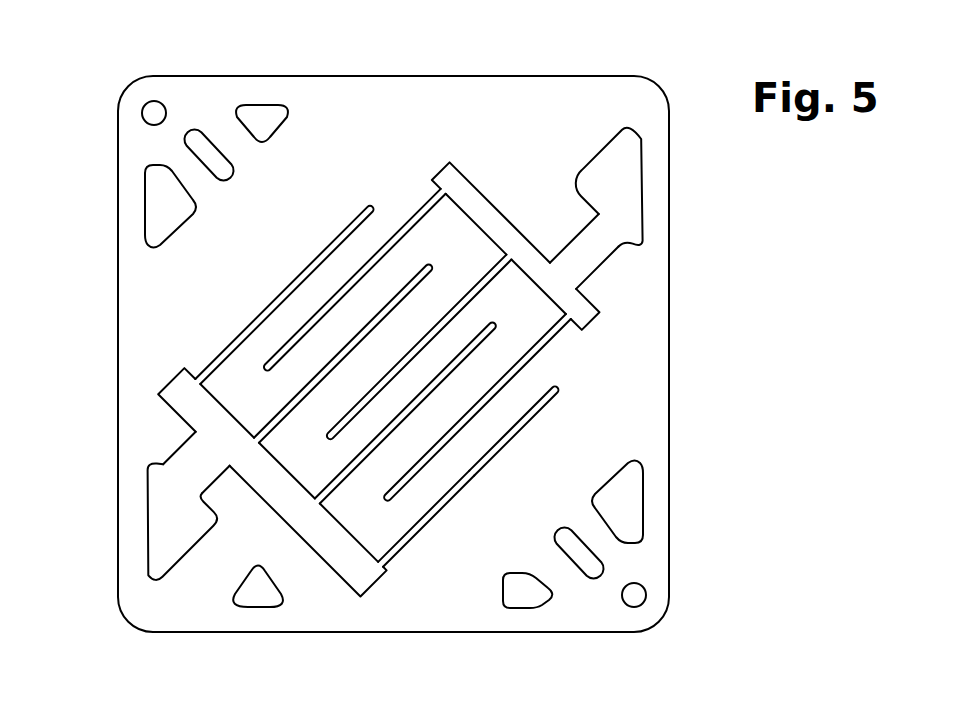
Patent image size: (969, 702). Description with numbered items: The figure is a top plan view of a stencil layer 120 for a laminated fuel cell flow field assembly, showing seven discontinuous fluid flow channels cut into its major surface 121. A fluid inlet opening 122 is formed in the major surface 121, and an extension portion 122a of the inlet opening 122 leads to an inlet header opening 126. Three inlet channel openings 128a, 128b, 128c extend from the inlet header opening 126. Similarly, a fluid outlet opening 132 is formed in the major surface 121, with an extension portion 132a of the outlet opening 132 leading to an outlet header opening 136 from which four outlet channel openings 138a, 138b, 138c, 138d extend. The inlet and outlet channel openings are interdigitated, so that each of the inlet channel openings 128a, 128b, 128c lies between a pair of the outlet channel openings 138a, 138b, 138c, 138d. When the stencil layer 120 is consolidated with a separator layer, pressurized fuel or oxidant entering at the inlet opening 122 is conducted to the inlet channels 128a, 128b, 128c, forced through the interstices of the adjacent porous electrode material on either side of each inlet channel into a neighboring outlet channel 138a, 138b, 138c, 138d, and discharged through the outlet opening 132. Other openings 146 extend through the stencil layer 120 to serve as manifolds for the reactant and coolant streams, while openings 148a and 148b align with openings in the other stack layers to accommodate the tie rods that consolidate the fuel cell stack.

The stencil layer 120 is at (674, 79).
The major surface 121 is at (652, 373).
The fluid inlet opening 122 is at (628, 178).
The extension portion of inlet opening 122a is at (598, 305).
The inlet header opening 126 is at (473, 188).
The inlet channel opening 128a is at (443, 190).
The inlet channel opening 128b is at (550, 338).
The inlet channel opening 128c is at (535, 358).
The fluid outlet opening 132 is at (170, 533).
The extension portion of outlet opening 132a is at (188, 452).
The outlet header opening 136 is at (340, 568).
The outlet channel opening 138a is at (262, 366).
The outlet channel opening 138b is at (225, 345).
The outlet channel opening 138c is at (342, 487).
The outlet channel opening 138d is at (427, 527).
The openings 146 is at (162, 180).
The opening 148a is at (155, 108).
The opening 148b is at (637, 594).